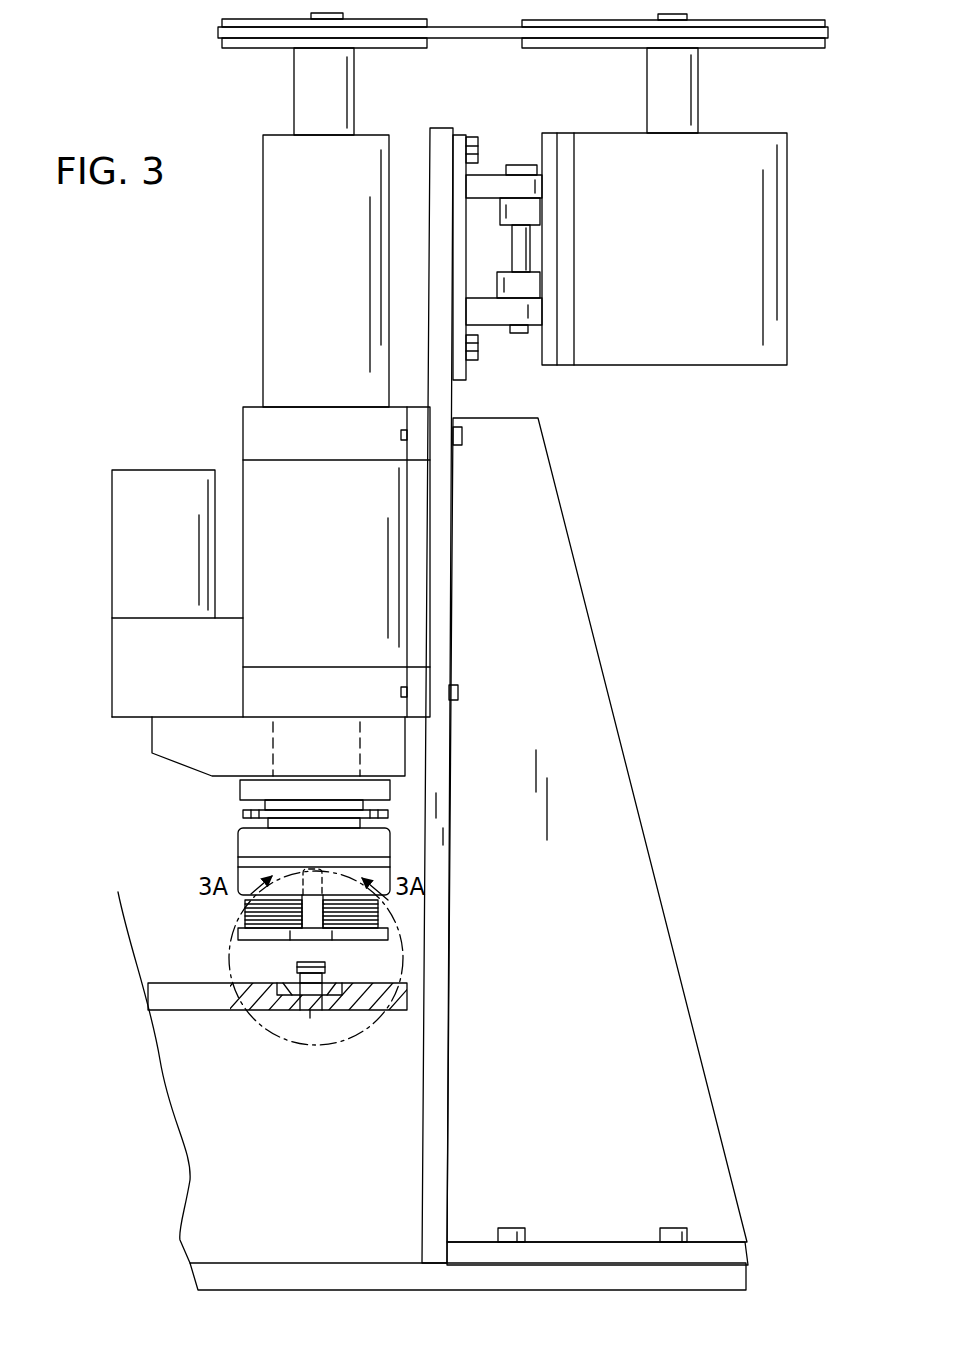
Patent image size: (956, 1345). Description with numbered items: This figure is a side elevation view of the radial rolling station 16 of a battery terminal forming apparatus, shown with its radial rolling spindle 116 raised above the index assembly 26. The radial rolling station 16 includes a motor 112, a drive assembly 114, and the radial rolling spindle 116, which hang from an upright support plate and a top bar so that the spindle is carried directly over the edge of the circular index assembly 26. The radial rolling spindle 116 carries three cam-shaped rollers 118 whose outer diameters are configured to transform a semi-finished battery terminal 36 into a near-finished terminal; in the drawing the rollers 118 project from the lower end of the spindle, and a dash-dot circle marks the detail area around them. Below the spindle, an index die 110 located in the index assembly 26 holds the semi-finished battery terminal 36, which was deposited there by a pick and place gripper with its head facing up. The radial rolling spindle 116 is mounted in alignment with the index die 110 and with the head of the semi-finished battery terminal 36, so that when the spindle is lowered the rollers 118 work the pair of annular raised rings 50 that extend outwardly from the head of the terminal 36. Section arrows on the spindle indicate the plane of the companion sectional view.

The radial rolling station 16 is at (99, 420).
The index assembly 26 is at (187, 1028).
The semi-finished battery terminal 36 is at (310, 1010).
The annular raised rings 50 is at (318, 966).
The index die 110 is at (284, 999).
The motor 112 is at (716, 368).
The drive assembly 114 is at (243, 479).
The radial rolling spindle 116 is at (238, 846).
The cam-shaped rollers 118 is at (243, 906).